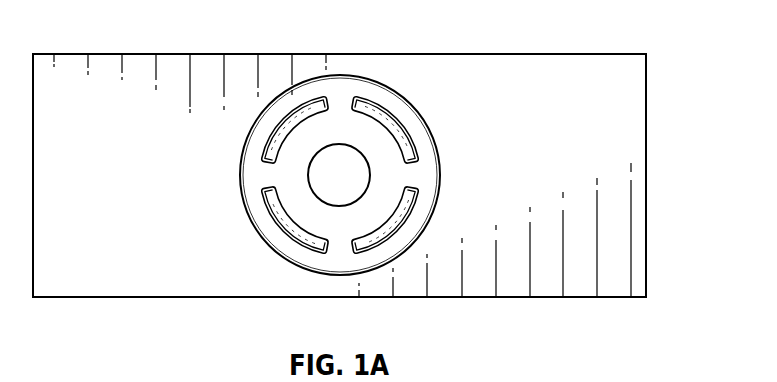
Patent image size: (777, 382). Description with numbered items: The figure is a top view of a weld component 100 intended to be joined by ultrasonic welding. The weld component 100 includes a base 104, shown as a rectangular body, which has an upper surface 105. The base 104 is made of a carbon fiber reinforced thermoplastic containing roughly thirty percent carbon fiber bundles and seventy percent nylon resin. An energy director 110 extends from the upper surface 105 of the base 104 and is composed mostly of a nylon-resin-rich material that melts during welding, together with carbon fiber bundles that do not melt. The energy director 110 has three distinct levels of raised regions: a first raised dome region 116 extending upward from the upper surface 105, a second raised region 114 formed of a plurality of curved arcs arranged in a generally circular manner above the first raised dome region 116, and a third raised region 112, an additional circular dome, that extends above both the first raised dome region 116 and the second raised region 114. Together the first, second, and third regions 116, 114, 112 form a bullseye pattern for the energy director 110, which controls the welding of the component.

The weld component 100 is at (383, 180).
The base 104 is at (647, 192).
The upper surface 105 is at (122, 284).
The energy director 110 is at (341, 147).
The third raised region 112 is at (338, 185).
The second raised region 114 is at (303, 78).
The first raised dome region 116 is at (297, 185).